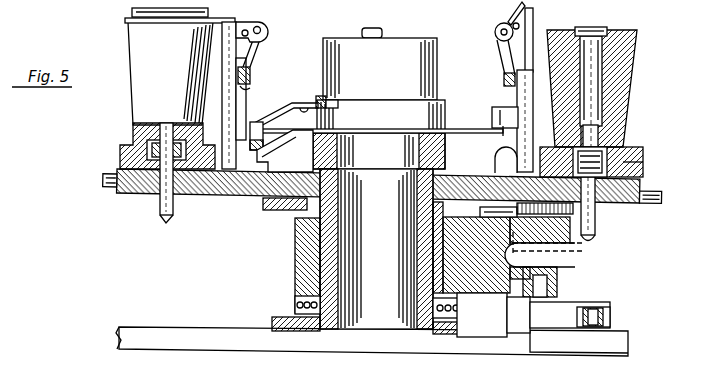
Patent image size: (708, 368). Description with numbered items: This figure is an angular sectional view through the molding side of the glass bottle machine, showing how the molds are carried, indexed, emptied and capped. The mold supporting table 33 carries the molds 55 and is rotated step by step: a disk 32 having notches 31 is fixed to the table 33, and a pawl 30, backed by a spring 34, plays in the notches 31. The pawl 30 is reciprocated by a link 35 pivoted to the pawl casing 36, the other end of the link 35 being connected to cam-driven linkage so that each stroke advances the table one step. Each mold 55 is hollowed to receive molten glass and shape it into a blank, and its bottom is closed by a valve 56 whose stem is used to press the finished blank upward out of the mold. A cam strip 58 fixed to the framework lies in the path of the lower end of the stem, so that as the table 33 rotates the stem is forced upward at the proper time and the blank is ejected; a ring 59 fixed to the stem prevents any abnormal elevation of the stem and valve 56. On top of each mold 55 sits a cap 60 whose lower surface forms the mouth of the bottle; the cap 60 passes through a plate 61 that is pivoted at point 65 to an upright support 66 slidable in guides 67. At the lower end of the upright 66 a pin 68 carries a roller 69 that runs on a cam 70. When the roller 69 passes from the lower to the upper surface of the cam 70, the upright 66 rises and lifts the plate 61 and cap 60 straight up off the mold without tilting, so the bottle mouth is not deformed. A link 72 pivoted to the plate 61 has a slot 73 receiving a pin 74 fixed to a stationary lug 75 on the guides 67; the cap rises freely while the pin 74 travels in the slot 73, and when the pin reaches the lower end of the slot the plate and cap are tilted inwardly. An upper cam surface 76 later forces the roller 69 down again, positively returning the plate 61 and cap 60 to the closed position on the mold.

The pawl 30 is at (494, 166).
The notches 31 is at (265, 211).
The disk 32 is at (296, 212).
The mold supporting table 33 is at (208, 195).
The spring 34 is at (497, 170).
The link 35 is at (573, 303).
The pawl casing 36 is at (504, 269).
The mold 55 is at (637, 47).
The valve 56 is at (600, 125).
The cam strip 58 is at (590, 244).
The ring 59 is at (628, 162).
The cap 60 is at (130, 10).
The plate 61 is at (490, 12).
The pivot point 65 is at (264, 31).
The upright support 66 is at (258, 22).
The guides 67 is at (238, 95).
The pin 68 is at (236, 145).
The roller 69 is at (258, 120).
The cam 70 is at (272, 143).
The link 72 is at (254, 50).
The slot 73 is at (250, 75).
The pin 74 is at (250, 86).
The lug 75 is at (238, 70).
The upper cam surface 76 is at (331, 100).